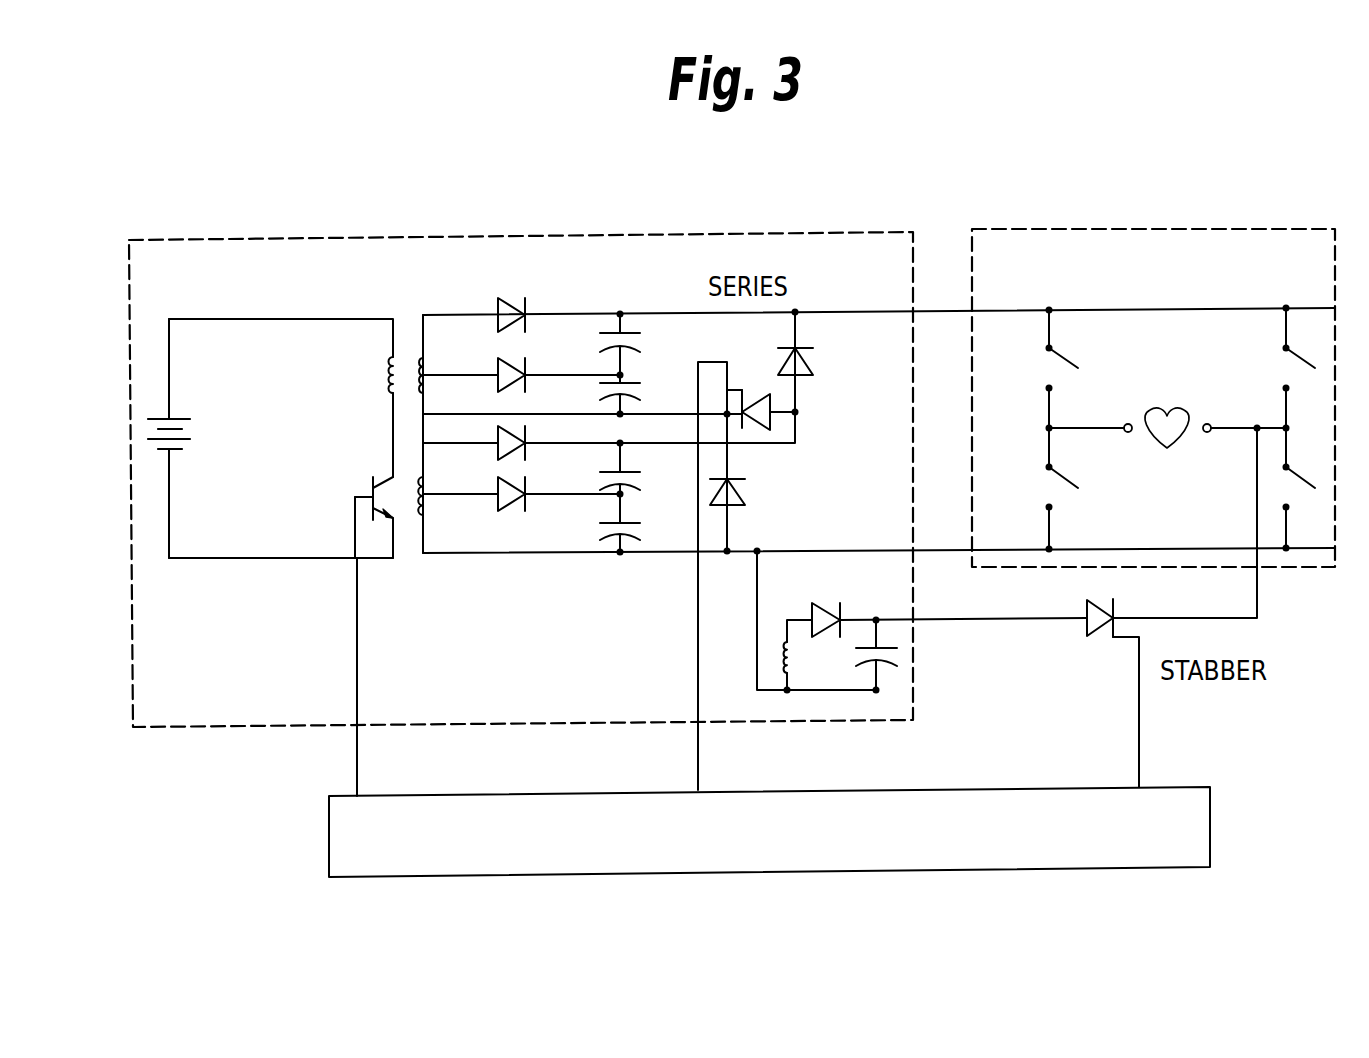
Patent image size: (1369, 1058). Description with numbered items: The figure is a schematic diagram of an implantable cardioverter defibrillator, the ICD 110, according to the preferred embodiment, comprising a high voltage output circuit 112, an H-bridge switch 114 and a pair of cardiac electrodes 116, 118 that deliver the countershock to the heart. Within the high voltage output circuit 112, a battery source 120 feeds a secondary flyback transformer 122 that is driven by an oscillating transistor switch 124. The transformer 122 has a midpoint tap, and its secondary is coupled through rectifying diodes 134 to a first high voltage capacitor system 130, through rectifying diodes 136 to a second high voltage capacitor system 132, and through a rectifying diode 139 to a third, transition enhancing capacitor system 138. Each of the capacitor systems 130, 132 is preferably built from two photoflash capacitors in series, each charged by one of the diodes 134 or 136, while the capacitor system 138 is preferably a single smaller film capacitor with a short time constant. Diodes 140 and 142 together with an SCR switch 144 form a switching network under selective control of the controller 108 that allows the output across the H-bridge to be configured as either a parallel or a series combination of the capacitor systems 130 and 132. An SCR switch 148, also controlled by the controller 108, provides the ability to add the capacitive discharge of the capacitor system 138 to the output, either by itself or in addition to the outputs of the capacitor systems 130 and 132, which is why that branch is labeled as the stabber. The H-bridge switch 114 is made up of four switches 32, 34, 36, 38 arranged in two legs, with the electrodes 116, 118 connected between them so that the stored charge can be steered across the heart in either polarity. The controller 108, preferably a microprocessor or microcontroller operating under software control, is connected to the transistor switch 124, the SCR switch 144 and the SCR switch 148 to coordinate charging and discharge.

The controller 108 is at (905, 870).
The ICD 110 is at (1050, 150).
The high voltage output circuit 112 is at (274, 240).
The H-bridge switch 114 is at (1296, 229).
The cardiac electrode 116 is at (1128, 423).
The cardiac electrode 118 is at (1207, 423).
The battery source 120 is at (178, 440).
The secondary flyback transformer 122 is at (390, 373).
The oscillating transistor switch 124 is at (357, 608).
The high voltage capacitor system 130 is at (623, 374).
The high voltage capacitor system 132 is at (625, 490).
The rectifying diodes 134 is at (505, 300).
The rectifying diodes 136 is at (512, 455).
The transition enhancing capacitor system 138 is at (900, 648).
The rectifying diode 139 is at (845, 605).
The diode 140 is at (813, 360).
The diode 142 is at (745, 490).
The SCR switch 144 is at (772, 410).
The SCR switch 148 is at (1100, 600).
The switch 32 is at (1049, 348).
The switch 34 is at (1286, 348).
The switch 36 is at (1049, 467).
The switch 38 is at (1286, 467).